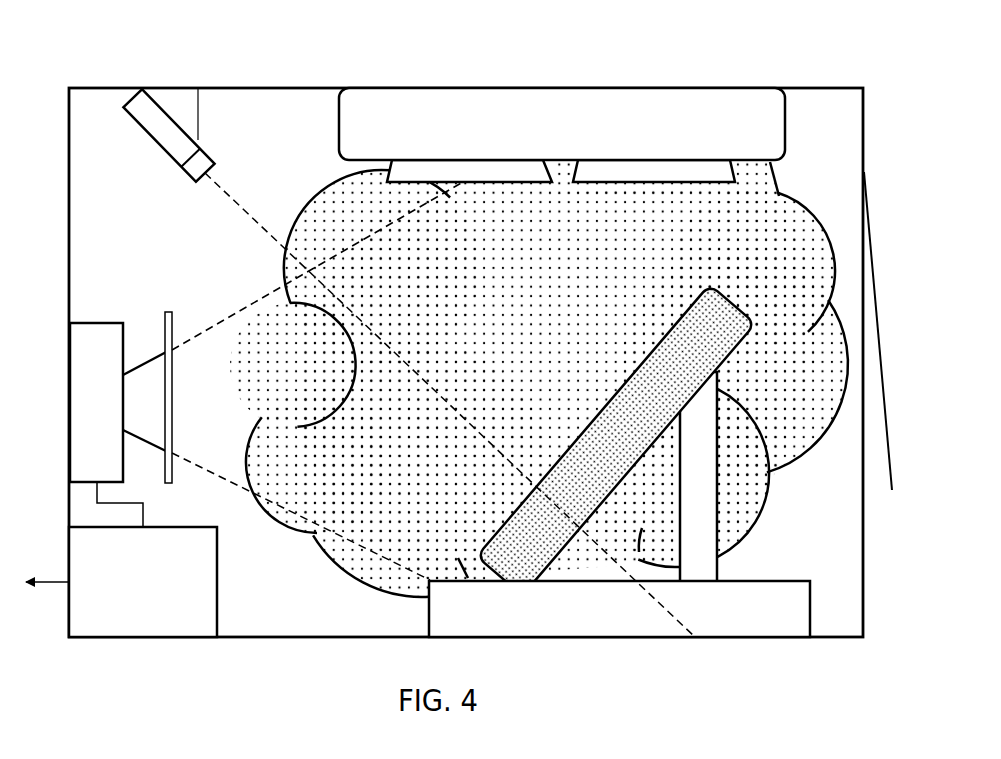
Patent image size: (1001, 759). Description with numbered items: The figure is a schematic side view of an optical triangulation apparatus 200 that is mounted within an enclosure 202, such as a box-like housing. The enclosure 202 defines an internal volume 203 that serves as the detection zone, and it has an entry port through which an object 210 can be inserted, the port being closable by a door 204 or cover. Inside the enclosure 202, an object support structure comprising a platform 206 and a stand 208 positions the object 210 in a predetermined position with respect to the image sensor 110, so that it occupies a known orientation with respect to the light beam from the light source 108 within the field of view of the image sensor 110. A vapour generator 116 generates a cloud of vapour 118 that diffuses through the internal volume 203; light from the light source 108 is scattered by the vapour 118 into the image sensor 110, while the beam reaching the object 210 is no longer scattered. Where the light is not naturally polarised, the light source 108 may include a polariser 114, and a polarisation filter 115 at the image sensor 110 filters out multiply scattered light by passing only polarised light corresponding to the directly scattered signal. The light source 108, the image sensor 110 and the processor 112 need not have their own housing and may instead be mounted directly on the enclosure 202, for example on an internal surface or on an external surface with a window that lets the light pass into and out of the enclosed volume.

The light source 108 is at (153, 117).
The image sensor 110 is at (97, 322).
The processor 112 is at (217, 582).
The polariser 114 is at (192, 167).
The polarisation filter 115 is at (173, 328).
The vapour generator 116 is at (583, 118).
The vapour 118 is at (728, 230).
The optical triangulation apparatus 200 is at (169, 662).
The enclosure 202 is at (278, 88).
The internal volume 203 is at (350, 606).
The door 204 is at (880, 320).
The platform 206 is at (715, 608).
The stand 208 is at (703, 567).
The object 210 is at (523, 553).